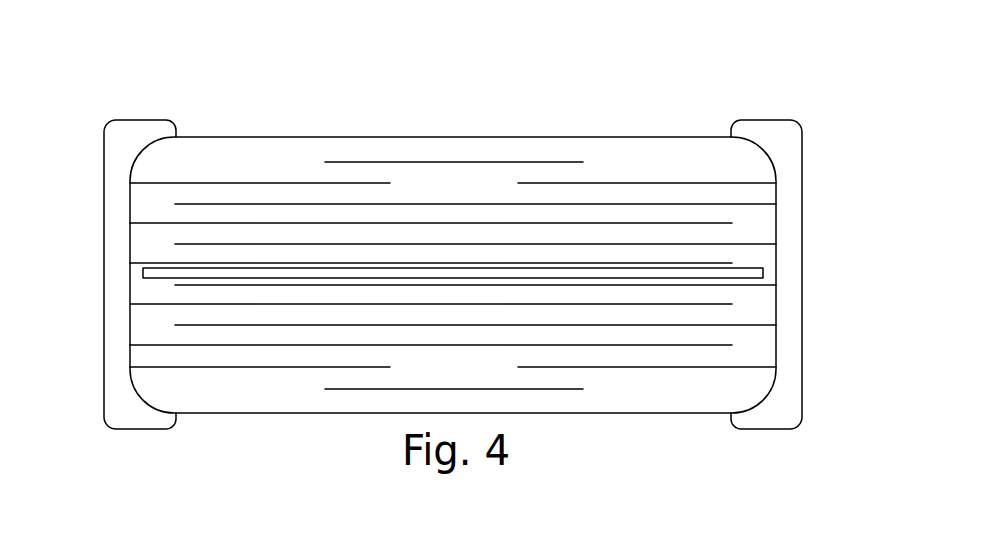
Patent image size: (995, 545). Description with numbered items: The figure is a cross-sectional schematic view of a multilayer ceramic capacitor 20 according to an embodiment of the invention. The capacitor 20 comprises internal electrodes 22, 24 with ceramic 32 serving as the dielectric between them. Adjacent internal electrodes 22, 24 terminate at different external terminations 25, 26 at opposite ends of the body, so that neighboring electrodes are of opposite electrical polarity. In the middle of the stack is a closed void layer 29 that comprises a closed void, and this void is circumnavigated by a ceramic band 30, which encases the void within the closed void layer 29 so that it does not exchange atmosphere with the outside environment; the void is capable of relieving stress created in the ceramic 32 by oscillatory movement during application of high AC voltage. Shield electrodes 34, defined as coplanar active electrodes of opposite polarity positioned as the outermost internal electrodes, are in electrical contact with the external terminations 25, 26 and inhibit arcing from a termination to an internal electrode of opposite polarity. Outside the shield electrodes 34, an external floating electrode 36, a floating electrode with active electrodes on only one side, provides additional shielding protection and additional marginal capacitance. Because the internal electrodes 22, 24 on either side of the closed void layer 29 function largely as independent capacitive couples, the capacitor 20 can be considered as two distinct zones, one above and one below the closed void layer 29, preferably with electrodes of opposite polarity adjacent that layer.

The capacitor 20 is at (811, 443).
The internal electrode 22 is at (153, 263).
The internal electrode 24 is at (748, 206).
The external termination 25 is at (123, 138).
The external termination 26 is at (785, 142).
The closed void layer 29 is at (71, 297).
The ceramic band 30 is at (142, 276).
The ceramic 32 is at (743, 222).
The shield electrode 34 is at (222, 183).
The external floating electrode 36 is at (413, 162).